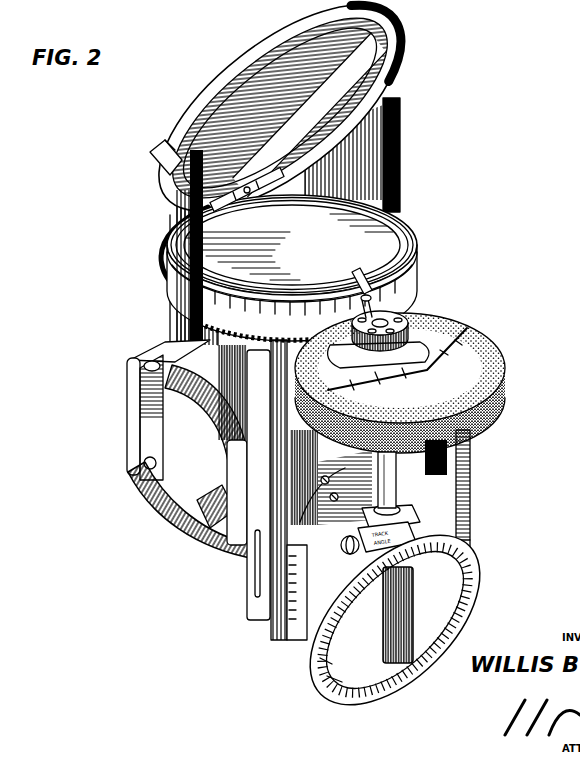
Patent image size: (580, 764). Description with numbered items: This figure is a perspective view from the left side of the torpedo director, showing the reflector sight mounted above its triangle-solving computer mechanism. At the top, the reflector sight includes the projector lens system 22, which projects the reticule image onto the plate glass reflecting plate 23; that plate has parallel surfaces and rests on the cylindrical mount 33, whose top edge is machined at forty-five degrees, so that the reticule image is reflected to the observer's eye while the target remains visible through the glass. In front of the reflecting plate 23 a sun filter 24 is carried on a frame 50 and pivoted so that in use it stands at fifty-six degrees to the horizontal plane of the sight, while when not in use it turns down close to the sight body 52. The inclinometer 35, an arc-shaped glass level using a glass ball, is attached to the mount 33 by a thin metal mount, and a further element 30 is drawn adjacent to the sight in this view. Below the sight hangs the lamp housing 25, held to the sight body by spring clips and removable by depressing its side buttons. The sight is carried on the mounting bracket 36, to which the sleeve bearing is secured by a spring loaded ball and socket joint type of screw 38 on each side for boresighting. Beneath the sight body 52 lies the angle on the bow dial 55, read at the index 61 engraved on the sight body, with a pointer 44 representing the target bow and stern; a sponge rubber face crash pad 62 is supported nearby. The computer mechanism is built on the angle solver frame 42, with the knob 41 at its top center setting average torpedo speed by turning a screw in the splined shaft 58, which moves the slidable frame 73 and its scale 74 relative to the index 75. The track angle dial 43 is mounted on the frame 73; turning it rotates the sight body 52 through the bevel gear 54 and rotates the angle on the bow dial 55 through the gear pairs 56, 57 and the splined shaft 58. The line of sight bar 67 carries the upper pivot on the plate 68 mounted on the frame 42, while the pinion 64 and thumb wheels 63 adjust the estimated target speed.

The projector lens system 22 is at (385, 240).
The reflecting plate 23 is at (335, 124).
The sun filter 24 is at (250, 50).
The lamp housing 25 is at (207, 547).
The bezel ring 30 is at (392, 222).
The cylindrical mount 33 is at (397, 112).
The inclinometer 35 is at (178, 195).
The mounting bracket 36 is at (132, 392).
The spring loaded ball and socket joint type of screw 38 is at (228, 508).
The knob 41 is at (432, 322).
The angle solver frame 42 is at (442, 455).
The track angle dial 43 is at (410, 620).
The pointer 44 is at (195, 232).
The frame 50 is at (163, 212).
The sight body 52 is at (160, 430).
The bevel gear 54 is at (320, 662).
The angle on the bow dial 55 is at (413, 257).
The gear pair 56 is at (405, 352).
The gear pair 57 is at (190, 333).
The splined shaft 58 is at (338, 495).
The index 61 is at (408, 297).
The face crash pad 62 is at (504, 363).
The thumb wheels 63 is at (327, 678).
The pinion 64 is at (423, 610).
The line of sight bar 67 is at (410, 478).
The plate 68 is at (412, 500).
The slidable frame 73 is at (230, 490).
The scale 74 is at (302, 607).
The index 75 is at (300, 570).